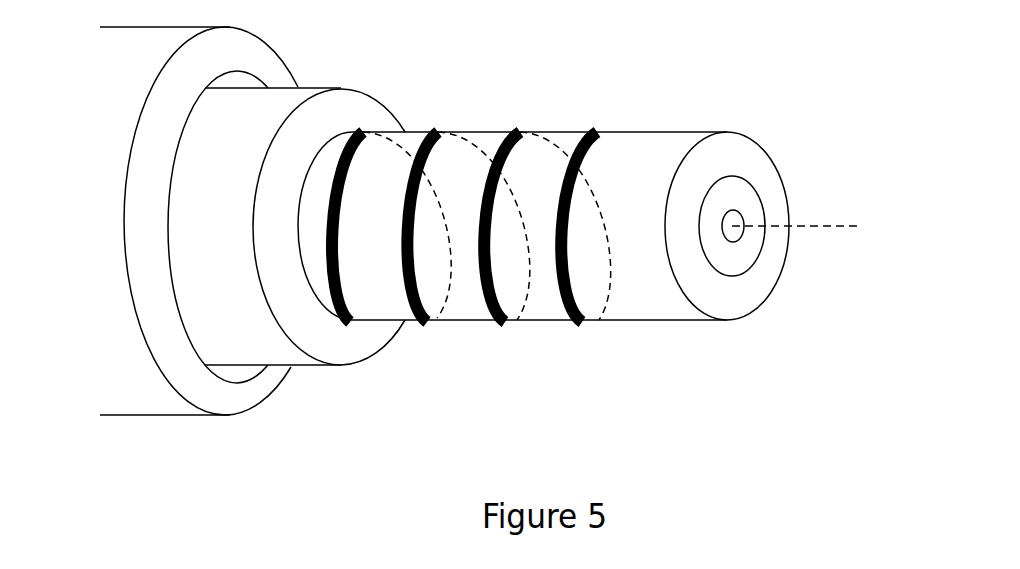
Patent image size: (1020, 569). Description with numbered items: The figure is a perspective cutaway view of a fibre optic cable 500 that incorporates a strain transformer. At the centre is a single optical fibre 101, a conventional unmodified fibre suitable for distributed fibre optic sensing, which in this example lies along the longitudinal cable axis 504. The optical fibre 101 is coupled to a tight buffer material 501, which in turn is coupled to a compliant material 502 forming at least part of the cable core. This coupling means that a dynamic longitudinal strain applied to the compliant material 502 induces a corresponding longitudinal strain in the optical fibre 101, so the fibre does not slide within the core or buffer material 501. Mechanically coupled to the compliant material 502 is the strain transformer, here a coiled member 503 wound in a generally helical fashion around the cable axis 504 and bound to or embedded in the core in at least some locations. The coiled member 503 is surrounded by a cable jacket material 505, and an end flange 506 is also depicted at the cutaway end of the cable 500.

The fibre optic cable 500 is at (780, 75).
The tight buffer material 501 is at (755, 262).
The compliant material 502 is at (757, 148).
The coiled member 503 is at (491, 317).
The longitudinal cable axis 504 is at (816, 226).
The cable jacket material 505 is at (323, 88).
The flange 506 is at (265, 390).
The optical fibre 101 is at (735, 211).